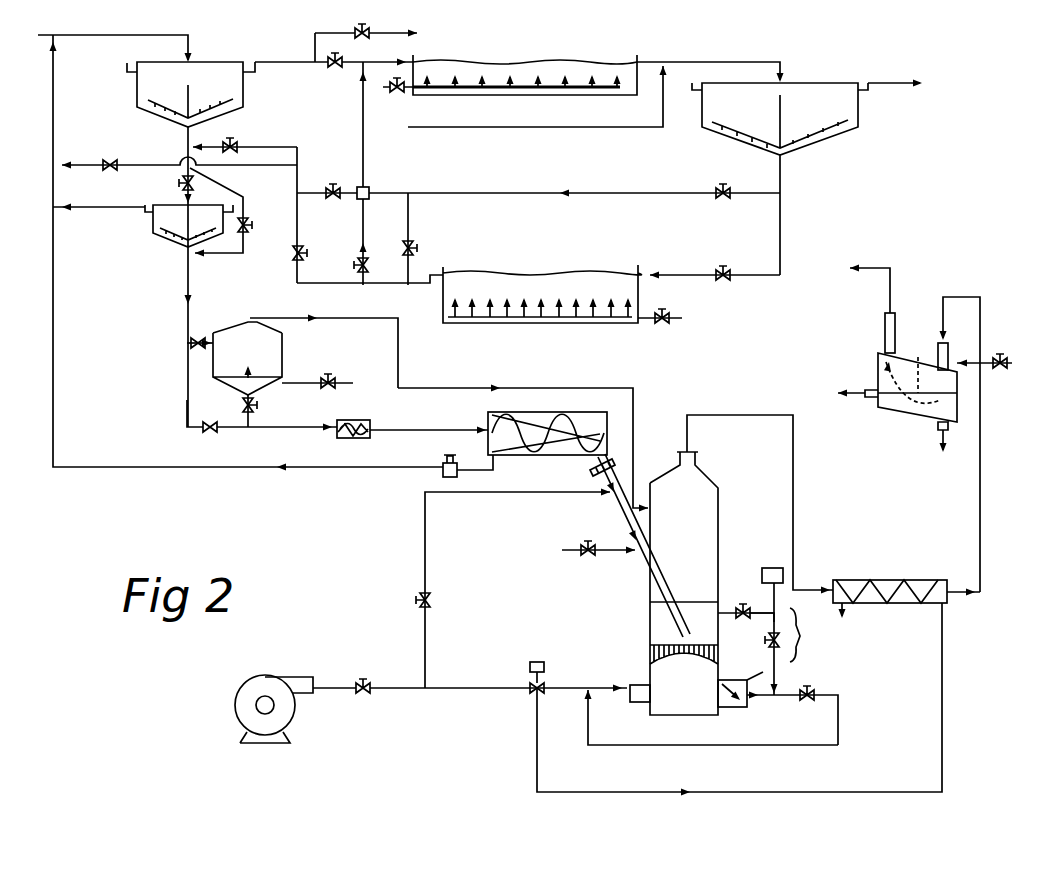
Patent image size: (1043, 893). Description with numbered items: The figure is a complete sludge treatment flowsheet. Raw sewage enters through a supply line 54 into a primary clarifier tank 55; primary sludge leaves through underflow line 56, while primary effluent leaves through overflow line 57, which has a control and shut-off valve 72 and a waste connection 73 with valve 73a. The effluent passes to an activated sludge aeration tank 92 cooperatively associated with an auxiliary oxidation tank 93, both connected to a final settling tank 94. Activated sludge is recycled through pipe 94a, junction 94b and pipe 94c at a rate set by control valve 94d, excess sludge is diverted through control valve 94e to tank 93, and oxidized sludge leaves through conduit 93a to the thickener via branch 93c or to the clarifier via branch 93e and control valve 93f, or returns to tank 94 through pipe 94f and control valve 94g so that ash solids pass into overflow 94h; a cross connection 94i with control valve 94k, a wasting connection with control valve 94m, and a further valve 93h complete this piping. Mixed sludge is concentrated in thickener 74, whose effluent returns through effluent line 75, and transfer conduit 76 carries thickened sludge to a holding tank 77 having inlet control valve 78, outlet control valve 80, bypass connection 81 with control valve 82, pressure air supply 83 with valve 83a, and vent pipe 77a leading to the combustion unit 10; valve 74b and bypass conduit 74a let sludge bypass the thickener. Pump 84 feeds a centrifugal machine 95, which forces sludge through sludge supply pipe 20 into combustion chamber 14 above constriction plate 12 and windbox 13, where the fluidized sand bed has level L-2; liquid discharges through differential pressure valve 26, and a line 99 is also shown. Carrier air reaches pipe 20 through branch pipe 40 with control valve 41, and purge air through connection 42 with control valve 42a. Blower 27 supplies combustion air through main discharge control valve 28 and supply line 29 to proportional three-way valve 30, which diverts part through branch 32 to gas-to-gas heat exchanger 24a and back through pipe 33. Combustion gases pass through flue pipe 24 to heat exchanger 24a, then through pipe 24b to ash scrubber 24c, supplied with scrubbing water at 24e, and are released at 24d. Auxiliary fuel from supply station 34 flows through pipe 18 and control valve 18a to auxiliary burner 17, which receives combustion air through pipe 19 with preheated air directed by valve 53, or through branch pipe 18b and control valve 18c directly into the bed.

The combustion unit 10 is at (722, 508).
The constriction plate 12 is at (706, 660).
The windbox 13 is at (686, 690).
The combustion chamber 14 is at (697, 545).
The bed level L-2 is at (705, 591).
The auxiliary burner 17 is at (730, 676).
The pipe 18 is at (803, 635).
The control valve 18a is at (760, 650).
The branch pipe 18b is at (770, 610).
The control valve 18c is at (724, 604).
The pipe 19 is at (753, 699).
The sludge supply pipe 20 is at (640, 572).
The flue duct 24 is at (796, 498).
The gas-to-gas heat exchanger 24a is at (884, 580).
The pipe 24b is at (975, 502).
The ash scrubber 24c is at (870, 372).
The atmospheric release 24d is at (880, 268).
The scrubbing water supply 24e is at (999, 354).
The differential pressure valve 26 is at (443, 466).
The blower 27 is at (262, 677).
The main discharge control valve 28 is at (365, 696).
The supply line 29 is at (412, 692).
The proportional three-way valve 30 is at (545, 680).
The delivery branch 32 is at (540, 766).
The pipe 33 is at (628, 745).
The auxiliary fuel supply station 34 is at (780, 568).
The branch pipe 40 is at (427, 580).
The control valve 41 is at (433, 602).
The high pressure purge air connection 42 is at (570, 562).
The control valve 42a is at (590, 546).
The valve 53 is at (803, 722).
The supply line 54 is at (88, 46).
The primary clarifier tank 55 is at (137, 92).
The underflow line 56 is at (186, 132).
The overflow line 57 is at (270, 66).
The control and shut-off valve 72 is at (338, 70).
The waste connection 73 is at (308, 44).
The valve 73a is at (364, 42).
The thickener 74 is at (146, 240).
The bypass conduit 74a is at (248, 200).
The valve 74b is at (252, 226).
The effluent line 75 is at (116, 212).
The transfer conduit 76 is at (194, 290).
The holding tank 77 is at (282, 350).
The vent pipe 77a is at (572, 388).
The control valve 78 is at (200, 336).
The control valve 80 is at (256, 406).
The bypass connection 81 is at (183, 398).
The control valve 82 is at (216, 436).
The pressure air supply 83 is at (305, 380).
The valve 83a is at (340, 382).
The metering pump 84 is at (375, 422).
The activated sludge aeration tank 92 is at (585, 96).
The auxiliary oxidation treatment tank 93 is at (562, 324).
The conduit 93a is at (247, 141).
The branch 93c is at (322, 162).
The branch 93e is at (234, 194).
The control valve 93f is at (179, 158).
The valve 93h is at (284, 253).
The final settling tank 94 is at (862, 132).
The pipe 94a is at (606, 194).
The junction 94b is at (381, 179).
The pipe 94c is at (362, 158).
The control valve 94d is at (733, 190).
The control valve 94e is at (730, 272).
The pipe 94f is at (372, 266).
The control valve 94g is at (418, 249).
The overflow 94h is at (544, 160).
The cross connection 94i is at (366, 234).
The control valve 94k is at (878, 82).
The control valve 94m is at (327, 180).
The centrifugal machine 95 is at (562, 404).
The return line 99 is at (354, 470).